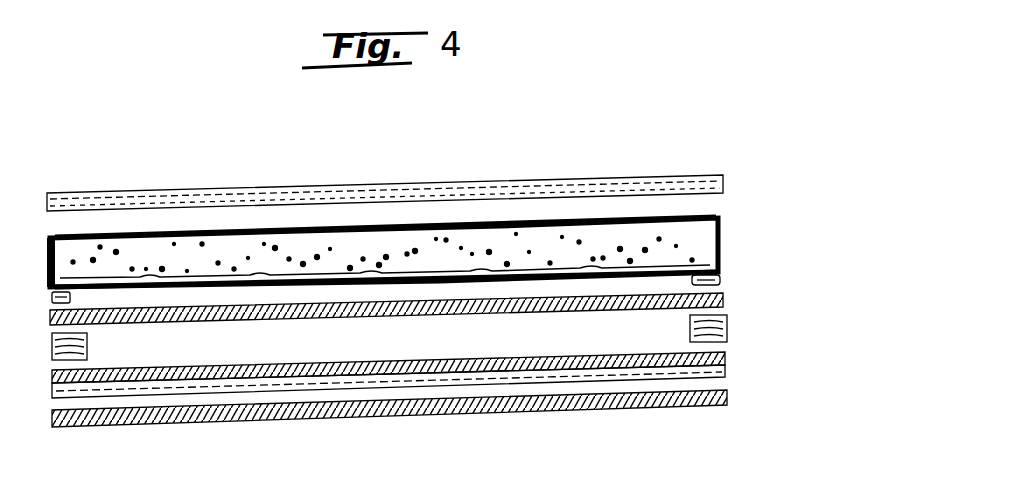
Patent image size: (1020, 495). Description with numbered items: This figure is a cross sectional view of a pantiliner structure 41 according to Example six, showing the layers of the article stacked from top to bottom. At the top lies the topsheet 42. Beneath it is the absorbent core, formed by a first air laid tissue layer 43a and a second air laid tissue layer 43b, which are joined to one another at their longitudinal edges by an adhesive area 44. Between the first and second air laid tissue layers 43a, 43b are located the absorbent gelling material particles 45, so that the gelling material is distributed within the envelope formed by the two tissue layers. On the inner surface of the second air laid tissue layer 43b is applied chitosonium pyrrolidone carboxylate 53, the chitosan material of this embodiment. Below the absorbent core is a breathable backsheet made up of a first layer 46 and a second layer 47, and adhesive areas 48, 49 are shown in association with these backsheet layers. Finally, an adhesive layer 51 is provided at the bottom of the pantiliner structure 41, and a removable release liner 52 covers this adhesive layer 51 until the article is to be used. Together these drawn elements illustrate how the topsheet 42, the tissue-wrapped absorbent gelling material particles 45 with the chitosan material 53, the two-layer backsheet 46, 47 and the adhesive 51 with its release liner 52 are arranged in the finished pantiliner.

The pantiliner structure 41 is at (607, 114).
The topsheet 42 is at (723, 187).
The first air laid tissue layer 43a is at (137, 237).
The second air laid tissue layer 43b is at (90, 278).
The adhesive area 44 is at (721, 243).
The absorbent gelling material particles 45 is at (445, 250).
The first layer of backsheet 46 is at (723, 300).
The second layer of backsheet 47 is at (725, 356).
The adhesive area 48 is at (723, 280).
The adhesive area 49 is at (728, 330).
The adhesive layer 51 is at (725, 375).
The removable release liner 52 is at (705, 410).
The chitosonium pyrrolidone carboxylate 53 is at (283, 272).